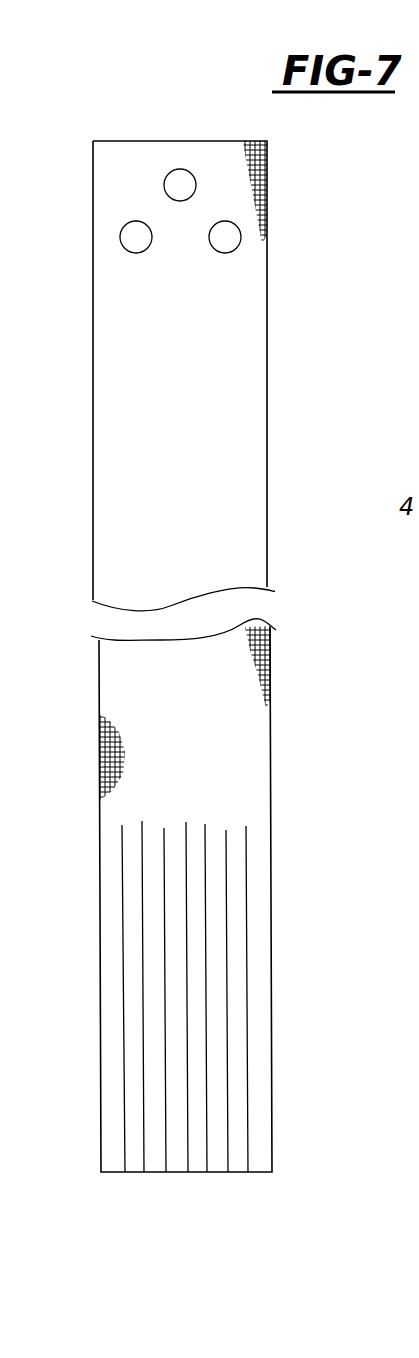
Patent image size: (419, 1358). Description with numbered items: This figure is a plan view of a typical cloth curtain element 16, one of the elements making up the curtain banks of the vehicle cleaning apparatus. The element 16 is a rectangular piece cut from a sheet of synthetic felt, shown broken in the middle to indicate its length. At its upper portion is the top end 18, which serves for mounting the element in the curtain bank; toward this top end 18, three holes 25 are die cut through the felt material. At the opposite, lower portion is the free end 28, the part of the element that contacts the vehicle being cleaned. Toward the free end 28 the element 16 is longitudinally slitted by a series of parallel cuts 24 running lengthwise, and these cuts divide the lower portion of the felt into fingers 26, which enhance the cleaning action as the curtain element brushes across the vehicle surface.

The cloth element 16 is at (243, 737).
The top end 18 is at (112, 130).
The parallel cuts 24 is at (207, 958).
The holes 25 is at (168, 172).
The fingers 26 is at (130, 1072).
The free end 28 is at (199, 1182).